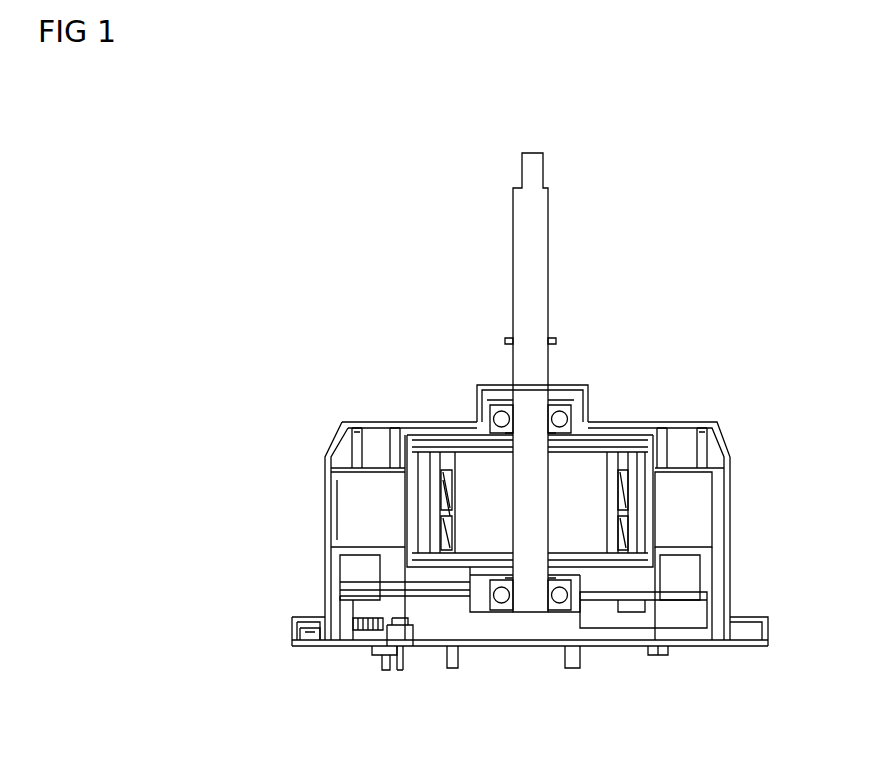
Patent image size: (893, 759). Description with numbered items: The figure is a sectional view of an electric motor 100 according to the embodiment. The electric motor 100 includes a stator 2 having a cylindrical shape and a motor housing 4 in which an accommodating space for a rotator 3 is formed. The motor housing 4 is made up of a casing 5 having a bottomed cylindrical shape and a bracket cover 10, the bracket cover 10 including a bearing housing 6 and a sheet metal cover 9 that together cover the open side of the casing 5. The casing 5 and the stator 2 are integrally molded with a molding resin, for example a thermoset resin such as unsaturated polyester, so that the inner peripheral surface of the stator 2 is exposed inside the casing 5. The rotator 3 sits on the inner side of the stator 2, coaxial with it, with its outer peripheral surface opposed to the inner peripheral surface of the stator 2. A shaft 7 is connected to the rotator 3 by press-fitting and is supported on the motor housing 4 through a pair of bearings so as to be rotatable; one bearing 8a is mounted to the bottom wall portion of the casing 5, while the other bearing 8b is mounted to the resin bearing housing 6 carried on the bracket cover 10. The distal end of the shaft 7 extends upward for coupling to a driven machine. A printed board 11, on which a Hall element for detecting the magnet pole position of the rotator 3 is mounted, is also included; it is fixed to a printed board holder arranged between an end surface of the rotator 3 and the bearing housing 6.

The electric motor 100 is at (738, 284).
The stator 2 is at (697, 522).
The rotator 3 is at (590, 485).
The motor housing 4 is at (170, 488).
The casing 5 is at (345, 488).
The bearing housing 6 is at (353, 615).
The shaft 7 is at (540, 270).
The bearing 8a is at (478, 421).
The bearing 8b is at (478, 607).
The sheet metal cover 9 is at (292, 628).
The bracket cover 10 is at (221, 578).
The printed board 11 is at (425, 593).